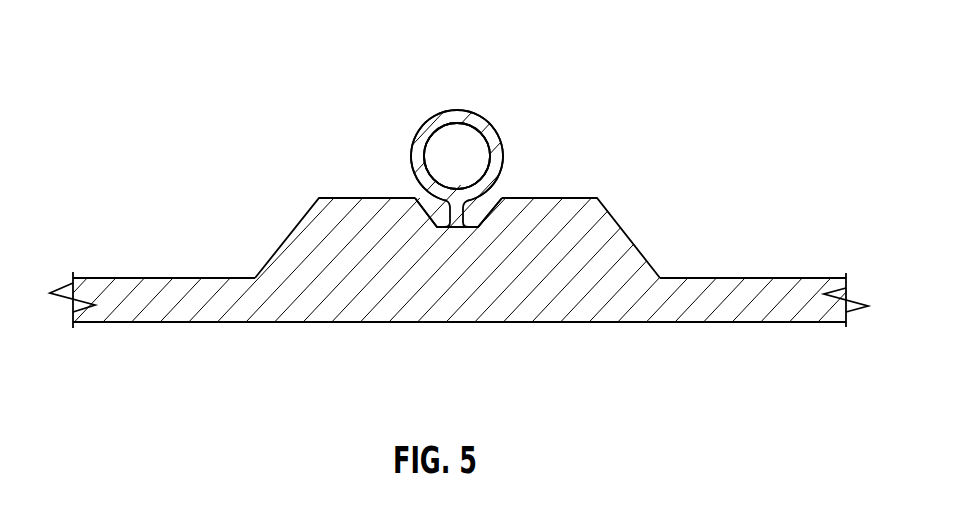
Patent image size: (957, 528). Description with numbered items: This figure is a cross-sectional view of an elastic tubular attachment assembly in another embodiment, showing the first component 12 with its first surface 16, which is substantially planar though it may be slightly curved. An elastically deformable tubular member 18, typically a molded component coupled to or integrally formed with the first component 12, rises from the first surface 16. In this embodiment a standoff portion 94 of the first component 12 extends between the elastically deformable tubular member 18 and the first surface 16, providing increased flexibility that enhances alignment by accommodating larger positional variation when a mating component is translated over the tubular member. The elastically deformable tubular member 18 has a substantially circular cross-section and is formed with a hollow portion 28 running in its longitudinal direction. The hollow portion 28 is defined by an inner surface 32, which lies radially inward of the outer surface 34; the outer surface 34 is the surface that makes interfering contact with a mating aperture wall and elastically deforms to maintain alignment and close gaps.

The first component 12 is at (160, 328).
The first surface 16 is at (328, 198).
The elastically deformable tubular member 18 is at (452, 86).
The hollow portion 28 is at (461, 145).
The inner surface 32 is at (490, 122).
The outer surface 34 is at (428, 125).
The standoff portion 94 is at (457, 236).